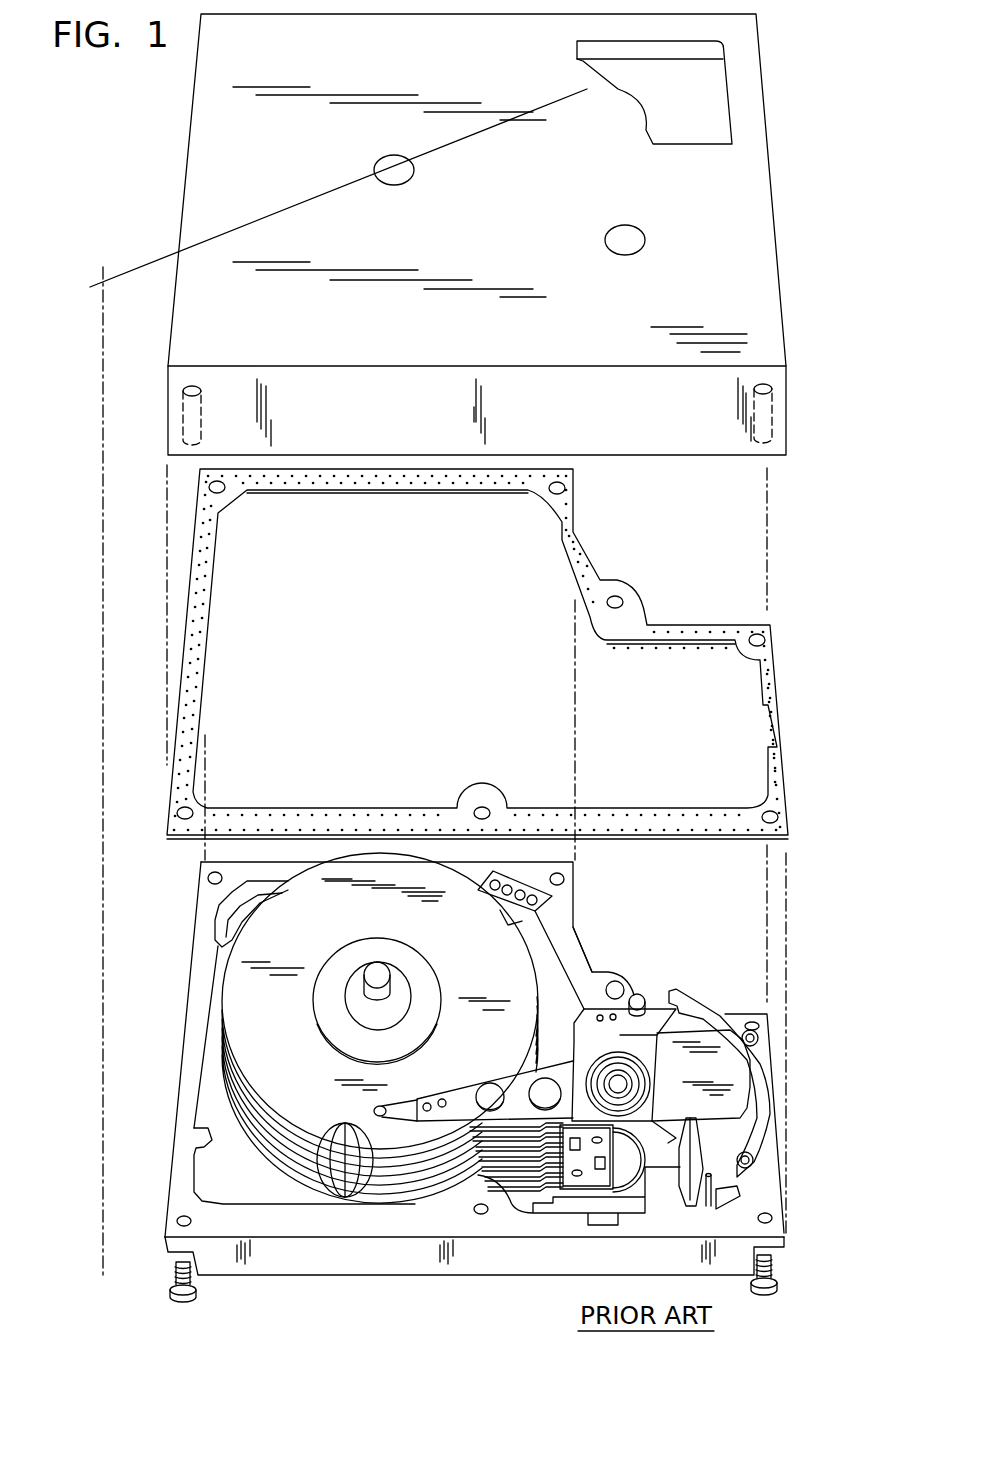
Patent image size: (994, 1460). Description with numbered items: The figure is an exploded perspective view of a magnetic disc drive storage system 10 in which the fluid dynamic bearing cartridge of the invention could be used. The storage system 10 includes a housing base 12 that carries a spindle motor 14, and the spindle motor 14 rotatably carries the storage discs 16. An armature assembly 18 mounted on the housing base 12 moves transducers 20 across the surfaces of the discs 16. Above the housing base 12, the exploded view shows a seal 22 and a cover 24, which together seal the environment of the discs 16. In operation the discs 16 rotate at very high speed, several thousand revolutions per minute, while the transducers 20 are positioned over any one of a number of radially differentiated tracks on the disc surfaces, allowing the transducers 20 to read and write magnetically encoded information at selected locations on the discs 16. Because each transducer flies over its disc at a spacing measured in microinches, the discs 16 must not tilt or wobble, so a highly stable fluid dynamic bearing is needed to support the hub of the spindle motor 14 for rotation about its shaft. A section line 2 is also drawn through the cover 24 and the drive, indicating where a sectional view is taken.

The section line 2 is at (566, 98).
The storage system 10 is at (507, 668).
The housing base 12 is at (784, 1222).
The spindle motor 14 is at (355, 1008).
The storage discs 16 is at (345, 1160).
The armature assembly 18 is at (522, 1200).
The transducers 20 is at (387, 1107).
The seal 22 is at (777, 788).
The cover 24 is at (775, 218).